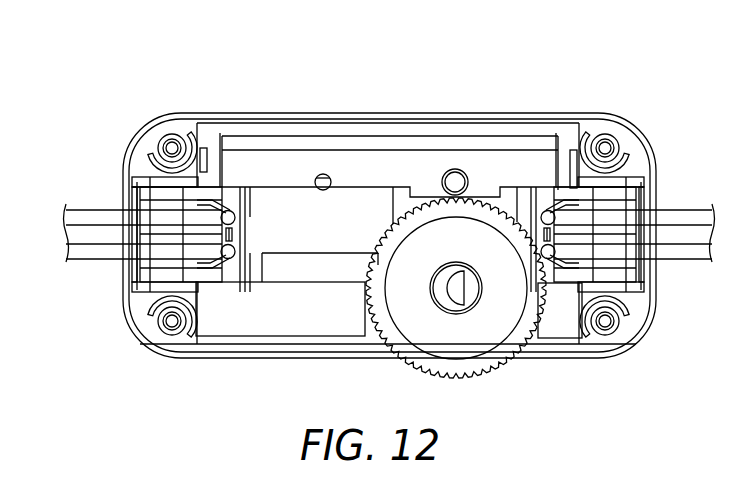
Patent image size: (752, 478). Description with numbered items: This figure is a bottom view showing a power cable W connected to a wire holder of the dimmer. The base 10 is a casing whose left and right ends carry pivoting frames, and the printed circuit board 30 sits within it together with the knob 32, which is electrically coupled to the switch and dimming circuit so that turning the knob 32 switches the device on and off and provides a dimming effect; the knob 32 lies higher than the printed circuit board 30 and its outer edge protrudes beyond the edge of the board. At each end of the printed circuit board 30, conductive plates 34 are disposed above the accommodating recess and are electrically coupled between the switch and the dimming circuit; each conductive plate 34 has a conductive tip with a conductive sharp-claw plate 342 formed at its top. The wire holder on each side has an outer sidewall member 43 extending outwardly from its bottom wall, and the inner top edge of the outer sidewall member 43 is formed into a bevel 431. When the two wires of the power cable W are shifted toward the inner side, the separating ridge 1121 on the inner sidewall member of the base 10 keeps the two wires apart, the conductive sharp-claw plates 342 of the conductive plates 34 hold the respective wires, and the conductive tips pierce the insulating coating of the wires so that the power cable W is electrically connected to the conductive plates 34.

The base 10 is at (516, 112).
The printed circuit board 30 is at (382, 146).
The knob 32 is at (463, 330).
The conductive plate 34 is at (244, 211).
The conductive sharp-claw plate 342 is at (236, 211).
The separating ridge 1121 is at (250, 186).
The outer sidewall member 43 is at (128, 201).
The bevel 431 is at (134, 196).
The power cable W is at (90, 219).